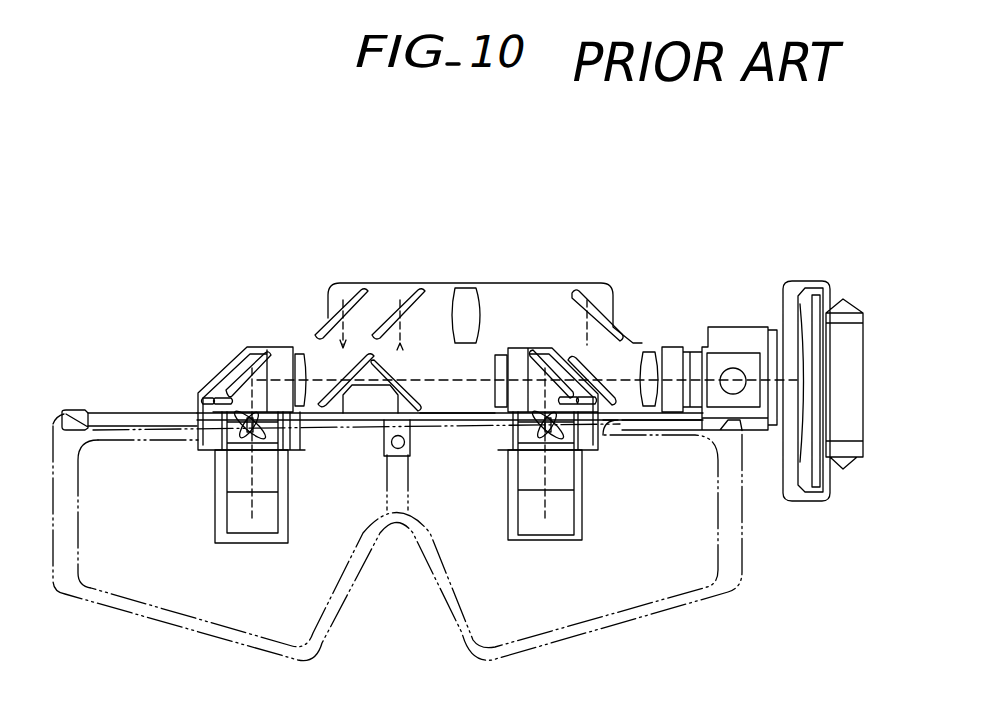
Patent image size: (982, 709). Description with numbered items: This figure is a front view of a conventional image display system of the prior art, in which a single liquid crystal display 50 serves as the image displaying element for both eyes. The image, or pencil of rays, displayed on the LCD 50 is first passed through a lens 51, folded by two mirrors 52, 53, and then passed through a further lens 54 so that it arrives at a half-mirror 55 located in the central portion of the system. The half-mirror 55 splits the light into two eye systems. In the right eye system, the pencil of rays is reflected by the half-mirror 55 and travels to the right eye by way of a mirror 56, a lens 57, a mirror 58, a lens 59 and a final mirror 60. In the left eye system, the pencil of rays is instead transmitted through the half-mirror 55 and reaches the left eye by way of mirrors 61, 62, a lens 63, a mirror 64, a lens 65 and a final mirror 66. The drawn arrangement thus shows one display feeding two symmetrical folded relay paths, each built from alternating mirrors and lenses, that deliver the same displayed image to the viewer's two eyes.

The liquid crystal display 50 is at (843, 299).
The lens 51 is at (648, 350).
The mirror 52 is at (567, 347).
The mirror 53 is at (590, 303).
The lens 54 is at (463, 288).
The half-mirror 55 is at (407, 293).
The mirror 56 is at (428, 395).
The lens 57 is at (460, 392).
The mirror 58 is at (516, 348).
The lens 59 is at (563, 432).
The mirror 60 is at (550, 528).
The mirror 61 is at (343, 297).
The mirror 62 is at (340, 404).
The lens 63 is at (300, 352).
The mirror 64 is at (240, 377).
The lens 65 is at (228, 425).
The mirror 66 is at (258, 528).